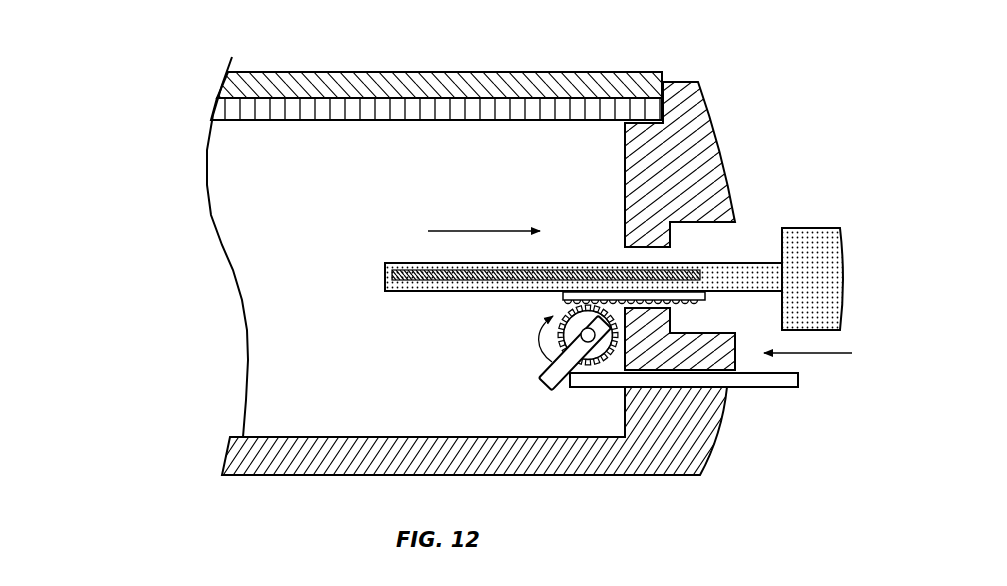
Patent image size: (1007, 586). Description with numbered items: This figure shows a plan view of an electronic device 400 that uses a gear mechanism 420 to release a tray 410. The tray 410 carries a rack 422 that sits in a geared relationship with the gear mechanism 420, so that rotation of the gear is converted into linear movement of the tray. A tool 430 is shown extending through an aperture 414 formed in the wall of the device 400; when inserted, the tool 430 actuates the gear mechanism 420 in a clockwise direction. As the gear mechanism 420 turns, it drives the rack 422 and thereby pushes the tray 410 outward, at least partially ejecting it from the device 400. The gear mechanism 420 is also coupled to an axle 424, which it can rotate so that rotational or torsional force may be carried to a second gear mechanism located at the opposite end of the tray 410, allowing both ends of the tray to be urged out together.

The electronic device 400 is at (130, 72).
The tray 410 is at (805, 228).
The aperture 414 is at (742, 404).
The gear mechanism 420 is at (547, 333).
The rack 422 is at (710, 273).
The axle 424 is at (562, 350).
The tool 430 is at (782, 390).